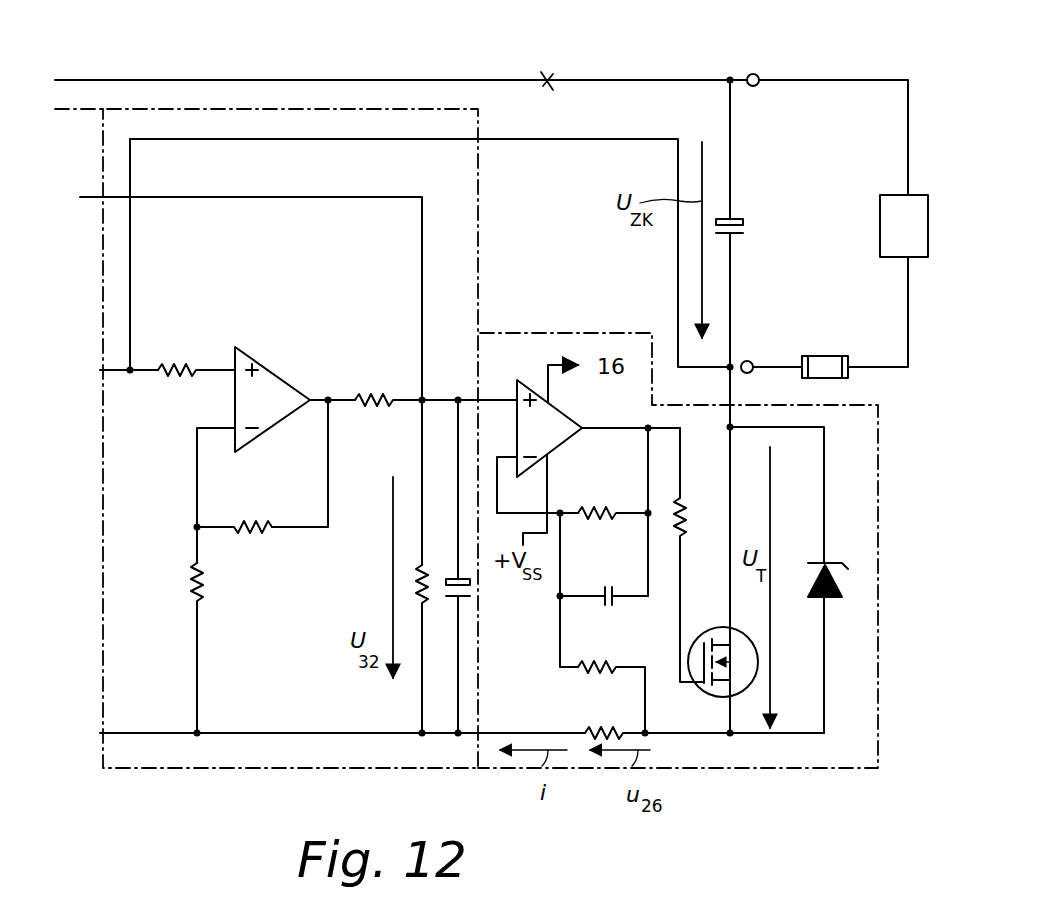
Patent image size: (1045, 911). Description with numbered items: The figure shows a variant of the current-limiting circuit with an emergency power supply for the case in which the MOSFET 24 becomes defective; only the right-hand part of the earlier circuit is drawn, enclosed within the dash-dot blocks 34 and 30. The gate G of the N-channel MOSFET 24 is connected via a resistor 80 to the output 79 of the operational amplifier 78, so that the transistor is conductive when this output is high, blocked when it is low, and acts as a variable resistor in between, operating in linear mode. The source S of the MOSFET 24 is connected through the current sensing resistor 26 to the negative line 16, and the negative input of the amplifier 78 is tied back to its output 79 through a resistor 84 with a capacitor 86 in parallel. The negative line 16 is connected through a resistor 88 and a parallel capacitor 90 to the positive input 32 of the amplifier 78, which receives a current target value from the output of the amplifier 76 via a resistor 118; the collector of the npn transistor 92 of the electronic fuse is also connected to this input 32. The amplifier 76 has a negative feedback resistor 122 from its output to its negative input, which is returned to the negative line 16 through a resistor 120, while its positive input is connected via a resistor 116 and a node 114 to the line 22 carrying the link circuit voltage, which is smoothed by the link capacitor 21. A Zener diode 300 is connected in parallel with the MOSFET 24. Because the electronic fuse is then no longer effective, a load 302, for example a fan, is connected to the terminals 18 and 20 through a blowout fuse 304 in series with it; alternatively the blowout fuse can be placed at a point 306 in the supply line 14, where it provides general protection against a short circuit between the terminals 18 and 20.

The supply line 14 is at (82, 80).
The negative line 16 is at (258, 733).
The terminal 18 is at (752, 72).
The terminal 20 is at (751, 362).
The capacitor 21 is at (735, 222).
The line 22 is at (520, 139).
The MOSFET 24 is at (702, 648).
The current sensing resistor 26 is at (592, 728).
The control circuit 30 is at (596, 330).
The positive input 32 is at (426, 396).
The circuit block 34 is at (394, 108).
The operational amplifier 76 is at (288, 380).
The operational amplifier 78 is at (566, 442).
The output 79 is at (600, 428).
The resistor 80 is at (686, 524).
The resistor 84 is at (592, 518).
The capacitor 86 is at (614, 590).
The resistor 88 is at (430, 568).
The capacitor 90 is at (446, 602).
The npn transistor 92 is at (614, 664).
The node 114 is at (130, 380).
The resistor 116 is at (178, 366).
The resistor 118 is at (376, 396).
The resistor 120 is at (205, 596).
The negative feedback resistor 122 is at (252, 524).
The Zener diode 300 is at (826, 562).
The load 302 is at (884, 200).
The blowout fuse 304 is at (862, 334).
The point 306 is at (580, 42).